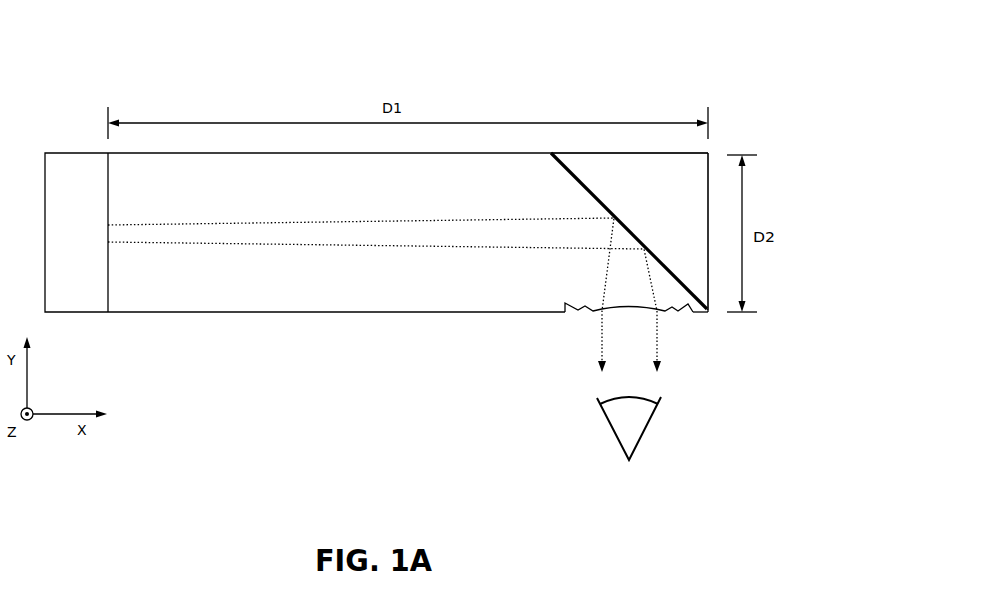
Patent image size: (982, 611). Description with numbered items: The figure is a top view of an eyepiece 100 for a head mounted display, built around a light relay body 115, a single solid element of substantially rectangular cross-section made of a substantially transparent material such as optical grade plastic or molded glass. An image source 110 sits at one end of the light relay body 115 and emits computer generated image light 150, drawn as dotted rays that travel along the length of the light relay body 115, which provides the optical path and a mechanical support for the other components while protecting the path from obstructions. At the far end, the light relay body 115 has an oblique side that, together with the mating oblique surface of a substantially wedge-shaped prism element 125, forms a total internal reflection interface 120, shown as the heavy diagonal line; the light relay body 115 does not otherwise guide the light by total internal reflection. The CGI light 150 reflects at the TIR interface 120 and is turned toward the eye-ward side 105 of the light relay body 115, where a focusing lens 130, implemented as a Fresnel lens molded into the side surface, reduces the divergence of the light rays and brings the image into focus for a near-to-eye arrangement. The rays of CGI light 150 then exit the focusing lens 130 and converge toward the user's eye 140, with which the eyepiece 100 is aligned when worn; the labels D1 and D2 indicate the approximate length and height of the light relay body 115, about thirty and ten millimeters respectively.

The eyepiece 100 is at (82, 67).
The eye-ward side 105 is at (477, 388).
The image source 110 is at (73, 303).
The light relay body 115 is at (322, 185).
The total internal reflection (TIR) interface 120 is at (574, 177).
The prism element 125 is at (670, 225).
The focusing lens 130 is at (675, 340).
The eye 140 is at (616, 439).
The computer generated image (CGI) light 150 is at (431, 245).